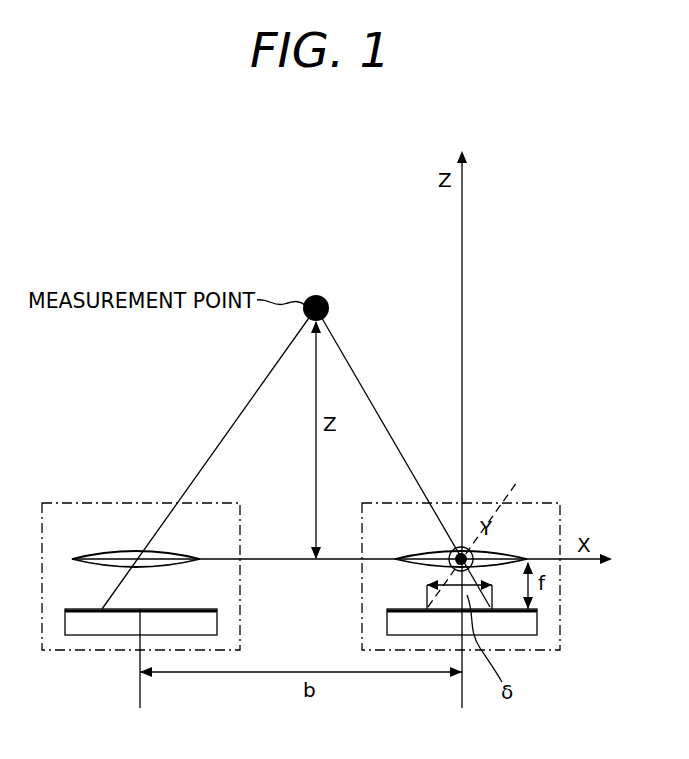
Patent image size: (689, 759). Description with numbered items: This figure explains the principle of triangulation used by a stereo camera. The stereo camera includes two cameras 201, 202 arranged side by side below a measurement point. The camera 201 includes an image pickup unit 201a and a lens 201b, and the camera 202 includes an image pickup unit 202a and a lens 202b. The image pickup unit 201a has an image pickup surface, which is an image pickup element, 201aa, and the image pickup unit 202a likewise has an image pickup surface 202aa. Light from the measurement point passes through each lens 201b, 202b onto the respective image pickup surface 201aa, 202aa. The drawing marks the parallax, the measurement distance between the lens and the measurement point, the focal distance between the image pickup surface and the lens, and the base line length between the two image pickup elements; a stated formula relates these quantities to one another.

The camera 201 is at (100, 503).
The image pickup unit 201a is at (95, 635).
The image pickup surface 201aa is at (197, 608).
The lens 201b is at (173, 550).
The camera 202 is at (527, 502).
The image pickup unit 202a is at (417, 635).
The image pickup surface 202aa is at (388, 610).
The lens 202b is at (425, 550).